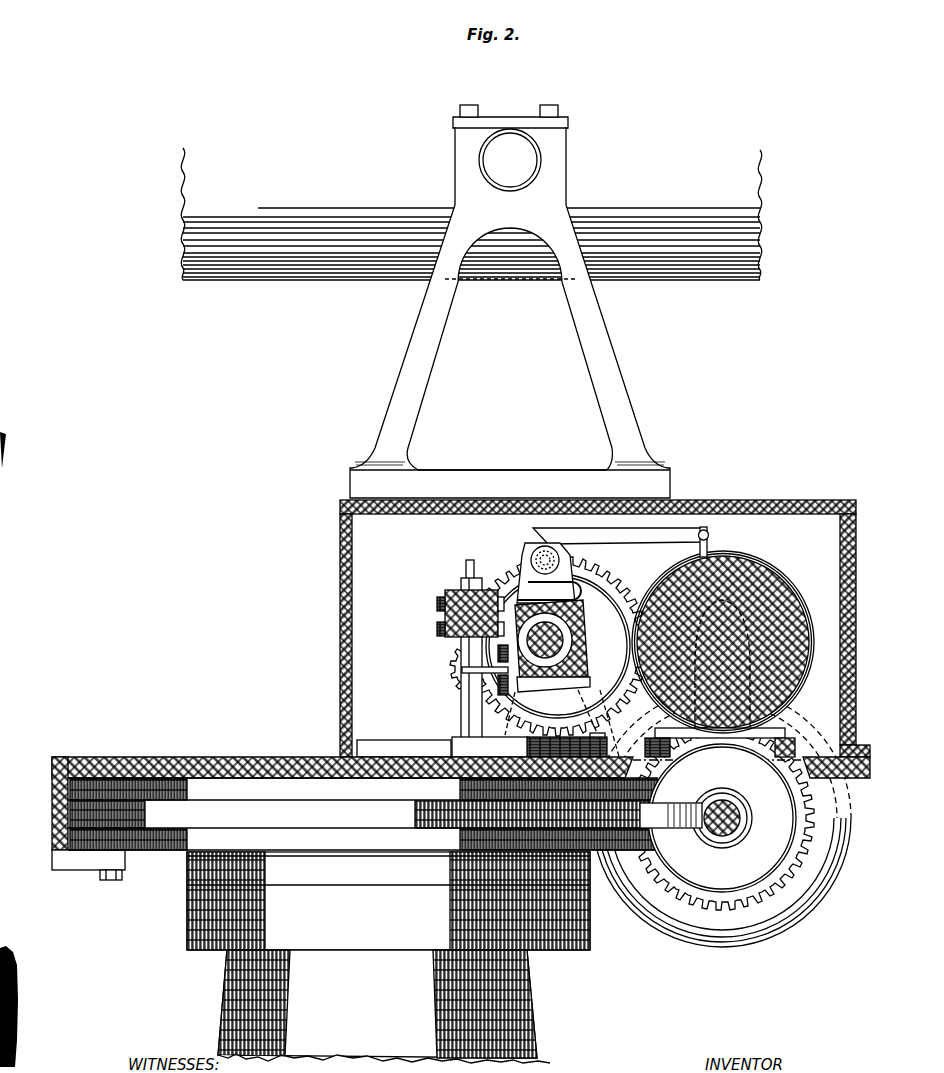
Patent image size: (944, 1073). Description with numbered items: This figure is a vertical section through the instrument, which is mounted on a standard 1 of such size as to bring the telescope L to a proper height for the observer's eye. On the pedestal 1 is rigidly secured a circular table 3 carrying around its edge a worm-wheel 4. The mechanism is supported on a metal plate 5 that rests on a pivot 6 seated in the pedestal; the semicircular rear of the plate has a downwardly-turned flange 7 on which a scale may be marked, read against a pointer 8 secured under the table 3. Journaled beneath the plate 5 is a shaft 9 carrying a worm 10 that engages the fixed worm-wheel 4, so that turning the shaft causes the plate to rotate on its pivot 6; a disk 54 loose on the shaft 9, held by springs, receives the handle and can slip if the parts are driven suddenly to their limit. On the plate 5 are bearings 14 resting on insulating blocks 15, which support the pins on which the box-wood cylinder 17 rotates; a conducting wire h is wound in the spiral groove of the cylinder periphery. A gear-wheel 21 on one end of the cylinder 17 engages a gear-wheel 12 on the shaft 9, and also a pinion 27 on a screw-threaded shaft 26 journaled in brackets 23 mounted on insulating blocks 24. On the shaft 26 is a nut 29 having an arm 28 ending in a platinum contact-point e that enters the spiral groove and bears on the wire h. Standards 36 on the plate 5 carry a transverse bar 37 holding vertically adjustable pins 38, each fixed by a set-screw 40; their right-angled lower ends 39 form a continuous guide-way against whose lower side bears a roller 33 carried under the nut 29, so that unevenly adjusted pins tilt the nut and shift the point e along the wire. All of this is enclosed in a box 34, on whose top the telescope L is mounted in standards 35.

The telescope L is at (471, 214).
The standards 35 is at (622, 385).
The box 34 is at (768, 502).
The pins 38 is at (470, 578).
The set-screw 40 is at (441, 598).
The transverse bar 37 is at (446, 640).
The lower ends of pins 39 is at (462, 680).
The standards 36 is at (455, 740).
The arm 28 is at (618, 543).
The pinion 27 is at (618, 590).
The contact-point e is at (710, 539).
The box-wood cylinder 17 is at (740, 560).
The conducting wire h is at (768, 566).
The nut 29 is at (578, 602).
The shaft 26 is at (575, 631).
The roller 33 is at (549, 690).
The gear-wheel 21 is at (616, 696).
The brackets 23 is at (600, 733).
The insulating blocks 24 is at (608, 751).
The bearings 14 is at (797, 706).
The insulating blocks 15 is at (806, 728).
The metal plate 5 is at (206, 756).
The circular table 3 is at (363, 810).
The pivot 6 is at (391, 783).
The flange 7 is at (59, 803).
The pointer 8 is at (98, 876).
The worm-wheel 4 is at (680, 806).
The shaft 9 is at (742, 815).
The worm 10 is at (748, 833).
The gear-wheel 12 is at (722, 818).
The disk 54 is at (818, 905).
The standard 1 is at (388, 957).